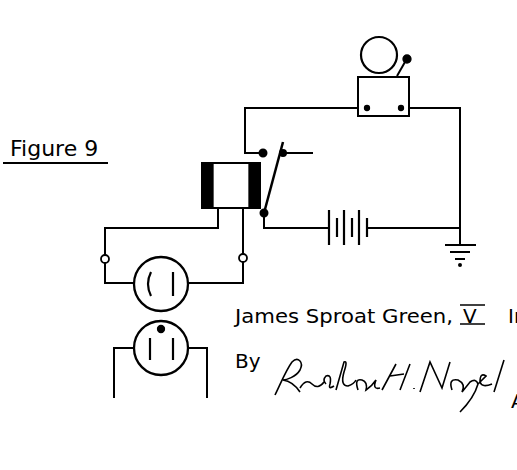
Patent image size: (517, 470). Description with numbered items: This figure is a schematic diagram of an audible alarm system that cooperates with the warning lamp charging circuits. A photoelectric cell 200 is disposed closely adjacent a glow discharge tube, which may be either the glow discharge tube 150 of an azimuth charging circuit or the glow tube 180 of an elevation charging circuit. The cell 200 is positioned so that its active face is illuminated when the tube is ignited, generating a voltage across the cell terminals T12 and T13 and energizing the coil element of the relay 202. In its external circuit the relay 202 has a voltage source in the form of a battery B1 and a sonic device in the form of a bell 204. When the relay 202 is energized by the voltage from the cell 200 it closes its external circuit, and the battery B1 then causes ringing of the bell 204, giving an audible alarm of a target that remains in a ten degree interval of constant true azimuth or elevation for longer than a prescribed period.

The relay 202 is at (196, 162).
The bell 204 is at (400, 87).
The battery B1 is at (358, 213).
The cell terminal T12 is at (101, 260).
The cell terminal T13 is at (247, 258).
The photoelectric cell 200 is at (137, 300).
The glow discharge tube 150 is at (134, 347).
The glow discharge tube 180 is at (108, 336).